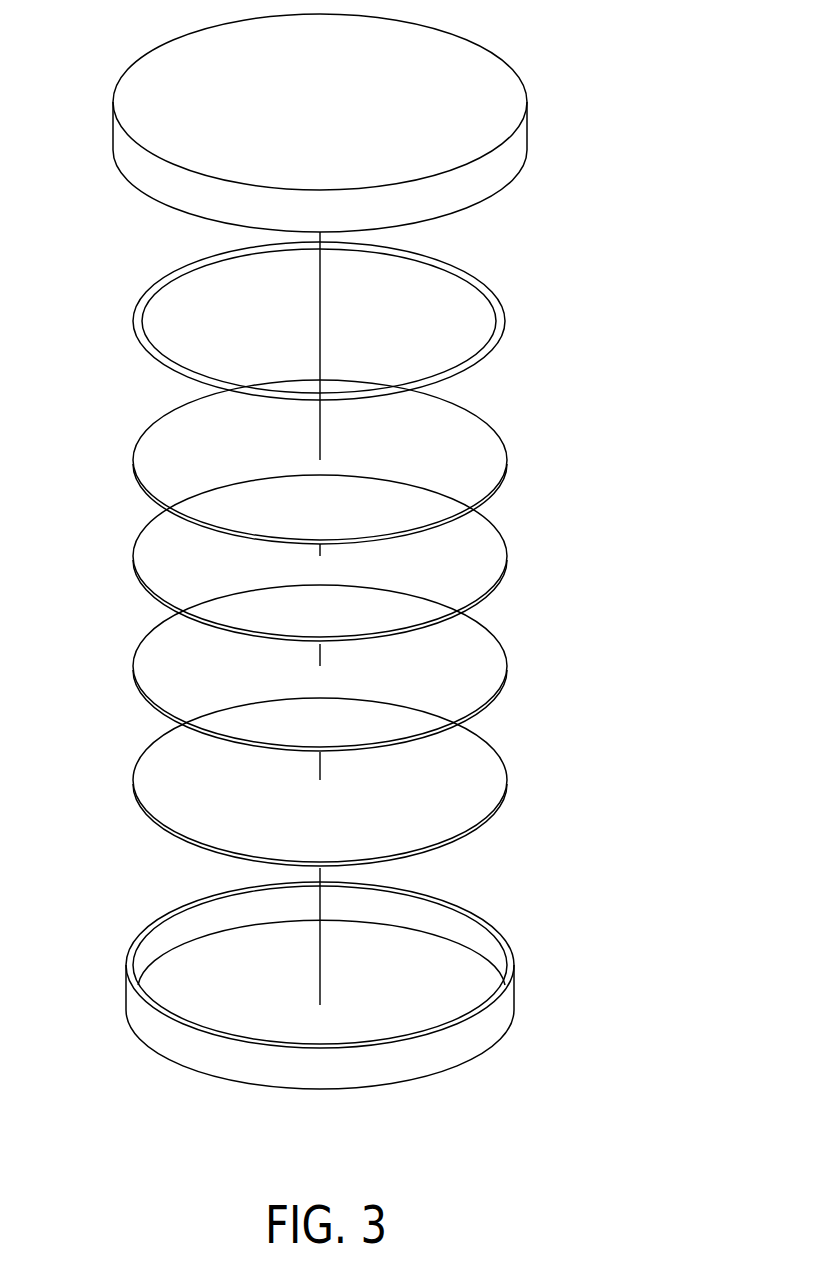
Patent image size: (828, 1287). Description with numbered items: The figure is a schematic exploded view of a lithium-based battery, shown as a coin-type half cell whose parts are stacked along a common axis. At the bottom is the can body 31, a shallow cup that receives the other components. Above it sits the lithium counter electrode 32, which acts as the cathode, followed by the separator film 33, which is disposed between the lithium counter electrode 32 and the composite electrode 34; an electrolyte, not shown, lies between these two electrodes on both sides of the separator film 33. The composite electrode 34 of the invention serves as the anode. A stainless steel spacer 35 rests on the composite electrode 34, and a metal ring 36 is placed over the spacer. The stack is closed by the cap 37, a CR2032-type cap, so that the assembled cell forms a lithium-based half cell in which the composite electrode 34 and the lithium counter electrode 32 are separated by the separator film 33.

The can body 31 is at (500, 1002).
The lithium counter electrode 32 is at (502, 785).
The separator film 33 is at (502, 660).
The composite electrode 34 is at (502, 557).
The stainless steel spacer 35 is at (502, 460).
The metal ring 36 is at (502, 318).
The cap 37 is at (523, 135).